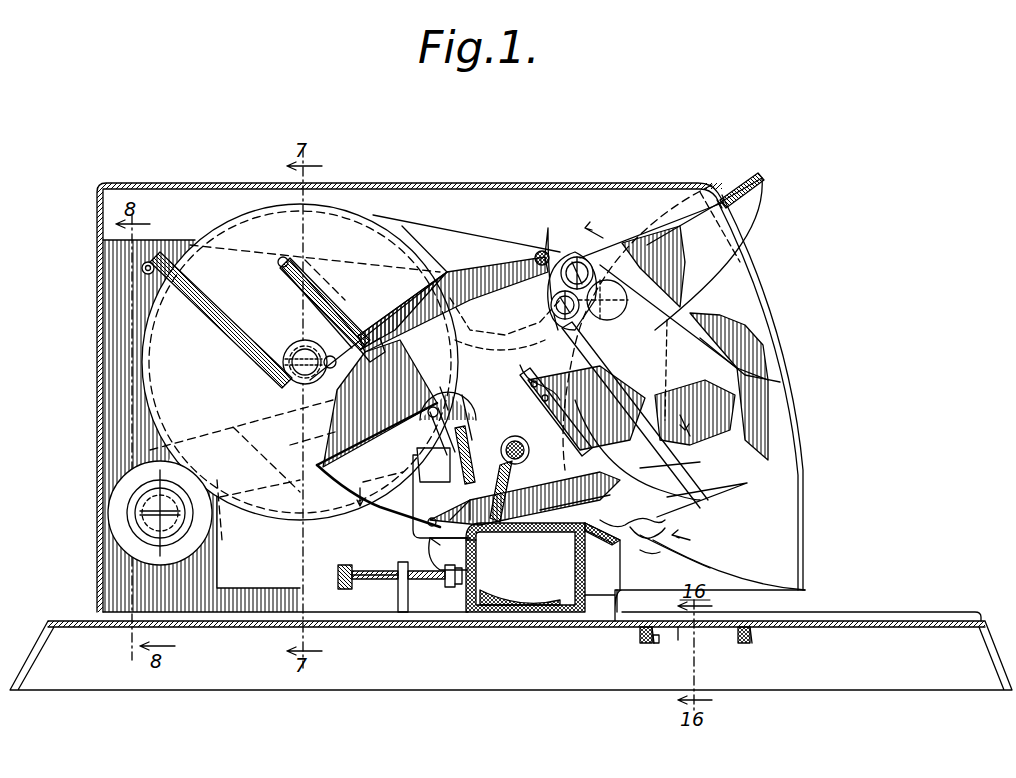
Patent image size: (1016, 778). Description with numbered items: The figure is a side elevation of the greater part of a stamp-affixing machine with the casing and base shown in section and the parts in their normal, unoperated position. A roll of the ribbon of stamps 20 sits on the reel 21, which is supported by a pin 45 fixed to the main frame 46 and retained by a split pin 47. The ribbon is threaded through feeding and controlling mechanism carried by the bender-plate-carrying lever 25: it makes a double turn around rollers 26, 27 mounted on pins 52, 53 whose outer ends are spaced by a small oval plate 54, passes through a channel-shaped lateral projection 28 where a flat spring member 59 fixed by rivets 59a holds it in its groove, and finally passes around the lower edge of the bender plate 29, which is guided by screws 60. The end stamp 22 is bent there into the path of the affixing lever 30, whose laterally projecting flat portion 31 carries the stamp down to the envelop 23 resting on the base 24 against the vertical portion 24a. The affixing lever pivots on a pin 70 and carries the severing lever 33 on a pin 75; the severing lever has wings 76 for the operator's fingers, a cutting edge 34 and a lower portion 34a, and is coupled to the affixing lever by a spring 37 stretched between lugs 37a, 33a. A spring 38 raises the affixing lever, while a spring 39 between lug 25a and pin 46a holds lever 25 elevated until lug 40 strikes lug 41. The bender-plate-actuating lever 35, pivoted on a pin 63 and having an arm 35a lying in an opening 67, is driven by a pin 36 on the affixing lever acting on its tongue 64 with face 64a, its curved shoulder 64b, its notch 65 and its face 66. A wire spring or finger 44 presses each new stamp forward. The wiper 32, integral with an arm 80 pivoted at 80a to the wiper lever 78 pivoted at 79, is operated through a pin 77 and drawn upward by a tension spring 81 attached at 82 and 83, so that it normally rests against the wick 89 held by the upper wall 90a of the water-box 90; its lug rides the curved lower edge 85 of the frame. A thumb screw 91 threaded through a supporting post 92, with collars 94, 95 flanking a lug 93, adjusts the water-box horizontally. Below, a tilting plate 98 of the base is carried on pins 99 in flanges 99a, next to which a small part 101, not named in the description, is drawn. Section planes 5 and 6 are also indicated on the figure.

The section line 5 is at (642, 380).
The section line 6 is at (378, 496).
The ribbon of stamps 20 is at (405, 225).
The reel 21 is at (330, 205).
The end stamp 22 is at (735, 505).
The envelop or package 23 is at (875, 612).
The base 24 is at (988, 618).
The vertical portion of the frame 24a is at (617, 597).
The bender-plate-carrying lever 25 is at (485, 282).
The lug 25a is at (228, 392).
The roller 26 is at (630, 188).
The roller 27 is at (646, 240).
The channel-shaped lateral projection 28 is at (677, 459).
The bender plate 29 is at (730, 478).
The affixing lever 30 is at (716, 320).
The laterally projecting flat portion 31 is at (760, 382).
The wiper 32 is at (607, 580).
The severing lever 33 is at (748, 250).
The lug 33a is at (538, 252).
The cutting edge 34 is at (700, 430).
The lower portion of the severing lever 34a is at (727, 403).
The bender-plate-actuating lever 35 is at (440, 520).
The arm of the bender-plate lever 35a is at (681, 412).
The pin 36 is at (410, 412).
The spring 37 is at (455, 280).
The lug 37a is at (372, 335).
The spring 38 is at (310, 265).
The spring 39 is at (176, 250).
The lug 40 is at (505, 333).
The lug 41 is at (575, 508).
The wire spring or finger 44 is at (624, 528).
The pin 45 is at (300, 348).
The main frame 46 is at (110, 310).
The pin 46a is at (142, 268).
The split pin 47 is at (285, 360).
The pin 52 is at (580, 255).
The pin 53 is at (580, 312).
The oval plate 54 is at (549, 225).
The flat spring member 59 is at (676, 482).
The rivets 59a is at (545, 385).
The screws 60 is at (660, 458).
The pin 63 is at (482, 500).
The arm or tongue 64 is at (433, 387).
The face 64a is at (474, 402).
The curved shoulder 64b is at (415, 439).
The notch or shoulder 65 is at (448, 458).
The face 66 is at (412, 490).
The opening 67 is at (675, 370).
The pin 70 is at (135, 513).
The pin 75 is at (622, 298).
The wings 76 is at (752, 180).
The pin 77 is at (500, 347).
The wiper lever 78 is at (433, 552).
The pivot 79 is at (545, 392).
The arm 80 is at (478, 540).
The pivot 80a is at (425, 538).
The tension spring 81 is at (512, 485).
The attachment point 82 is at (500, 570).
The attachment point 83 is at (505, 418).
The lower edge of the frame 85 is at (712, 566).
The wick 89 is at (600, 545).
The water-box 90 is at (455, 590).
The upper wall projection 90a is at (602, 520).
The thumb screw 91 is at (372, 582).
The supporting post 92 is at (350, 589).
The lug 93 is at (448, 588).
The washer or collar 94 is at (462, 588).
The washer or collar 95 is at (403, 612).
The plate 98 is at (677, 642).
The pins 99 is at (752, 634).
The flanges 99a is at (752, 643).
The stop 101 is at (656, 645).